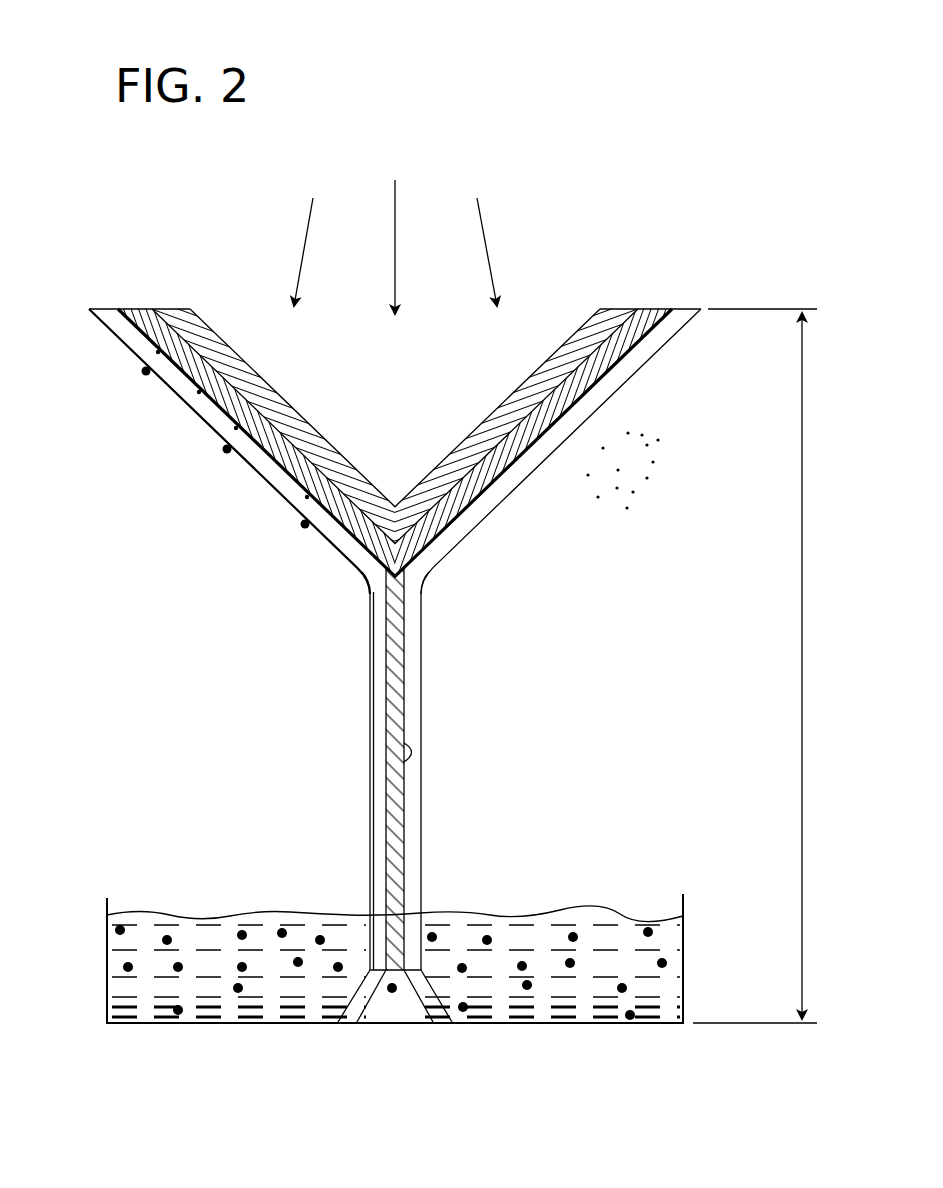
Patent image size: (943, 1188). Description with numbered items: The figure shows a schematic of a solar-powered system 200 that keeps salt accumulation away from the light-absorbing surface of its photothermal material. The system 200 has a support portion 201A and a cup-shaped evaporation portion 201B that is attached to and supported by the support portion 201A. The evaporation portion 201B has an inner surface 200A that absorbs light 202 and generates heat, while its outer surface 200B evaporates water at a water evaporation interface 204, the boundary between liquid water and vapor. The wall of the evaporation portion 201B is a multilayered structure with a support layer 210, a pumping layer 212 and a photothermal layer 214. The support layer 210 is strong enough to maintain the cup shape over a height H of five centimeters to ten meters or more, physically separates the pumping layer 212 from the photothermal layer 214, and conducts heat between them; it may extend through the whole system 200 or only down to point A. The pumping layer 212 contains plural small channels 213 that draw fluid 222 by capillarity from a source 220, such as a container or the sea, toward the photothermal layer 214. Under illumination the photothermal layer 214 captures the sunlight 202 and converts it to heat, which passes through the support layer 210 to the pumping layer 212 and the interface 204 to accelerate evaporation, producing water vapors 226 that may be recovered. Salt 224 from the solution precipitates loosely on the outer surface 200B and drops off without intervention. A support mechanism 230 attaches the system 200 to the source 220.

The solar-powered system 200 is at (606, 158).
The inner surface 200A is at (283, 397).
The outer surface 200B is at (256, 484).
The support portion 201A is at (360, 757).
The evaporation portion 201B is at (519, 500).
The light 202 is at (483, 222).
The water evaporation interface 204 is at (360, 578).
The support layer 210 is at (649, 311).
The pumping layer 212 is at (693, 306).
The small channels 213 is at (420, 752).
The photothermal layer 214 is at (620, 308).
The source 220 is at (683, 968).
The fluid 222 is at (190, 407).
The salt 224 is at (147, 372).
The water vapors 226 is at (630, 452).
The support mechanism 230 is at (412, 985).
The point A is at (430, 588).
The height H is at (800, 612).